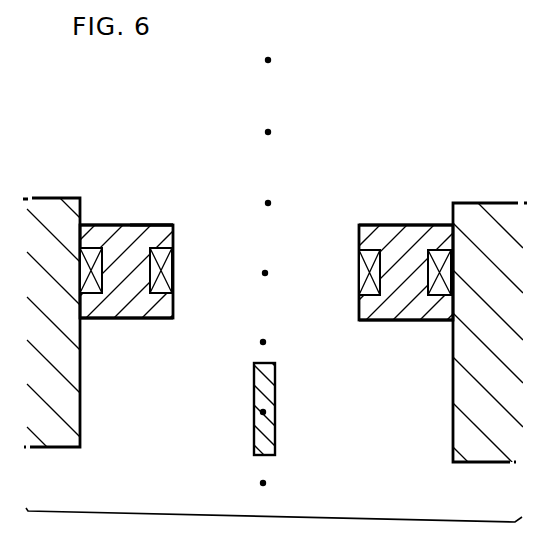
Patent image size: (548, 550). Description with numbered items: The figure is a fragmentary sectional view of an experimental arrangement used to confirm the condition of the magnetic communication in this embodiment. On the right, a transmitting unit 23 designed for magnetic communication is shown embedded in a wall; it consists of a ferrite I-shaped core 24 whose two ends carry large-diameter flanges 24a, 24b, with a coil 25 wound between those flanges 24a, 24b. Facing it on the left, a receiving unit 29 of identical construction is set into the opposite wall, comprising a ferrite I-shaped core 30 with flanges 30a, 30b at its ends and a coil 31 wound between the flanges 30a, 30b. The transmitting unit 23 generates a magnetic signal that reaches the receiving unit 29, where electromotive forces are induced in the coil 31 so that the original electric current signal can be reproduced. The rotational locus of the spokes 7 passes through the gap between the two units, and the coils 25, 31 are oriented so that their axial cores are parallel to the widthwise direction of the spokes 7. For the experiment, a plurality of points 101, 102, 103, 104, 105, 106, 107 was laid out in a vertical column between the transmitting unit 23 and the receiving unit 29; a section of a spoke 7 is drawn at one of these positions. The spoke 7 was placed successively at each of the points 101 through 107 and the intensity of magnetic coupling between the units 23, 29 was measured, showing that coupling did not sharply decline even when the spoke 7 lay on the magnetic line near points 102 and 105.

The spoke 7 is at (275, 443).
The transmitting unit 23 is at (401, 221).
The ferrite I-shaped core 24 is at (433, 235).
The flange 24a is at (365, 223).
The flange 24b is at (402, 322).
The coil 25 is at (360, 265).
The receiving unit 29 is at (112, 222).
The ferrite I-shaped core 30 is at (167, 303).
The flange 30a is at (162, 223).
The flange 30b is at (126, 319).
The coil 31 is at (175, 262).
The point 101 is at (289, 60).
The point 102 is at (289, 131).
The point 103 is at (289, 203).
The point 104 is at (284, 273).
The point 105 is at (283, 341).
The point 106 is at (283, 408).
The point 107 is at (283, 481).